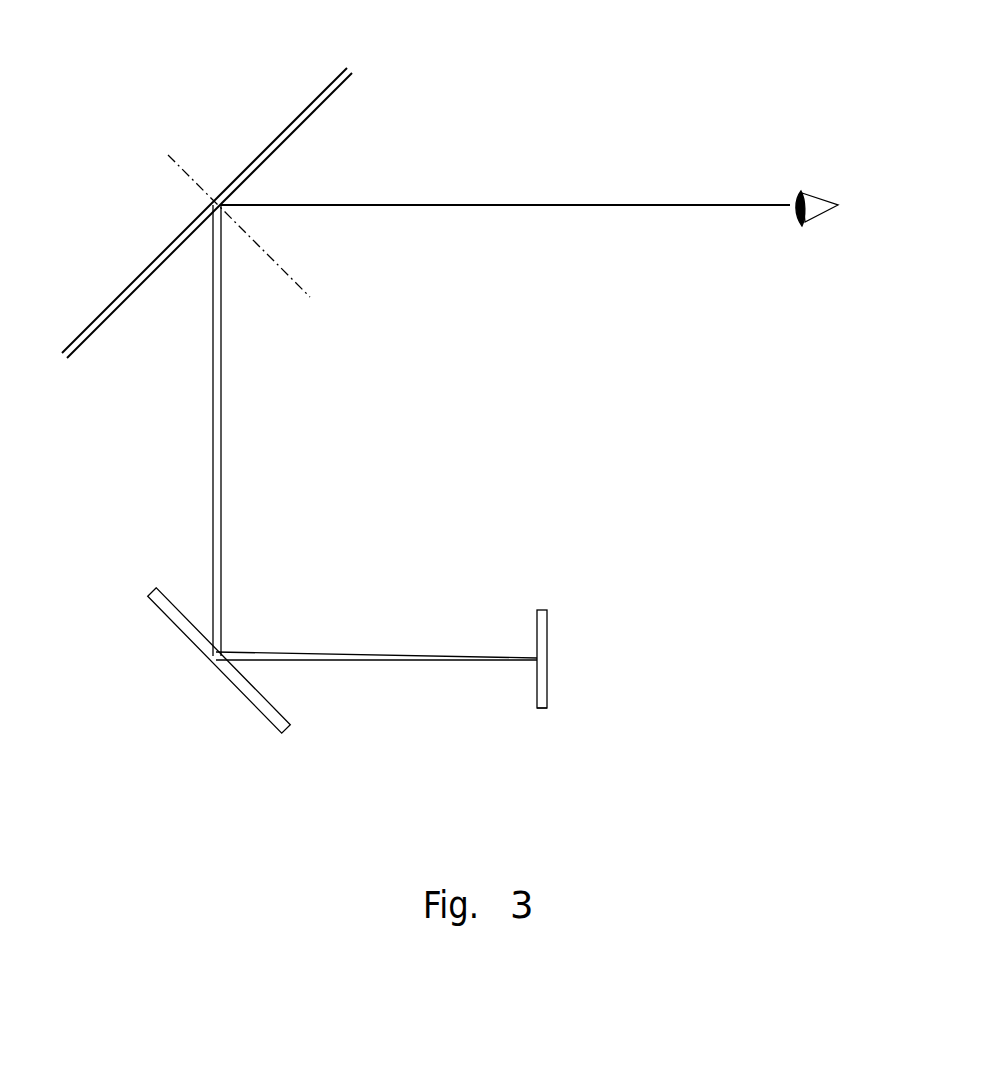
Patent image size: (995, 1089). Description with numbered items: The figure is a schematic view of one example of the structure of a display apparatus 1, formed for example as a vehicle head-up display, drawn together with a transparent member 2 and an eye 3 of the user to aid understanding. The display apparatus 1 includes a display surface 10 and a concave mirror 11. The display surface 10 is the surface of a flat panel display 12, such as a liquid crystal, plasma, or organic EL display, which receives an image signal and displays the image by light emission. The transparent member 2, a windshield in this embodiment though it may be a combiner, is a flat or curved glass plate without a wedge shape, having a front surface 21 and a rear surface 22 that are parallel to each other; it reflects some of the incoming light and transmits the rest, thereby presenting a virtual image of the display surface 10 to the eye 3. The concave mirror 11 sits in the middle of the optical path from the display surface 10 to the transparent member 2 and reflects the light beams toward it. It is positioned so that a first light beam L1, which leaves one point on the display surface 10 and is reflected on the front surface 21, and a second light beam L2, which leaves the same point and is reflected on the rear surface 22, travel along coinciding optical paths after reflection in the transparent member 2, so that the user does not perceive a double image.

The display apparatus 1 is at (491, 507).
The transparent member 2 is at (240, 179).
The eye 3 is at (826, 196).
The display surface 10 is at (537, 632).
The concave mirror 11 is at (292, 732).
The flat panel display 12 is at (546, 709).
The front surface 21 is at (310, 117).
The rear surface 22 is at (300, 108).
The first light beam L1 is at (222, 402).
The second light beam L2 is at (213, 405).